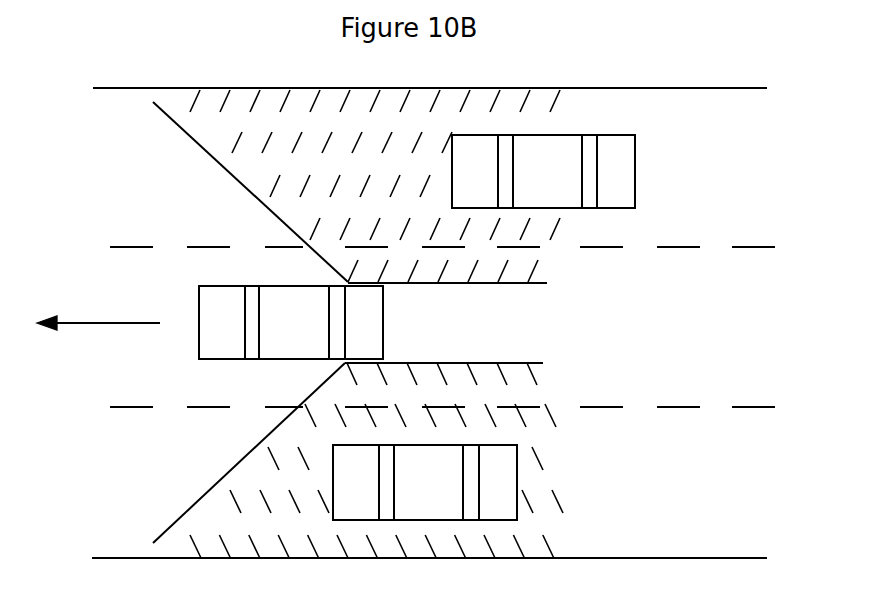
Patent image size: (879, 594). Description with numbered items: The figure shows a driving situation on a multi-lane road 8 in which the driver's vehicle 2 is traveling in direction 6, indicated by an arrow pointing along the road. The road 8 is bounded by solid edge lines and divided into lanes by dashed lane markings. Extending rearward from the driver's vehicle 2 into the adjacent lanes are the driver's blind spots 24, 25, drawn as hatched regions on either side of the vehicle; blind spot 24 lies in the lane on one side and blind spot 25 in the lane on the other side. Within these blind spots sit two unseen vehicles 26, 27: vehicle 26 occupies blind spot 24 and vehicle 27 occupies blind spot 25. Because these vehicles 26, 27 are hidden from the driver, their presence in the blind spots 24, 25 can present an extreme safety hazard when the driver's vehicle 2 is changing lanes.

The driver's vehicle 2 is at (278, 340).
The direction of travel 6 is at (85, 325).
The multi-lane road 8 is at (580, 103).
The driver's blind spot 24 is at (237, 112).
The driver's blind spot 25 is at (530, 390).
The unseen vehicle 26 is at (630, 180).
The unseen vehicle 27 is at (505, 500).